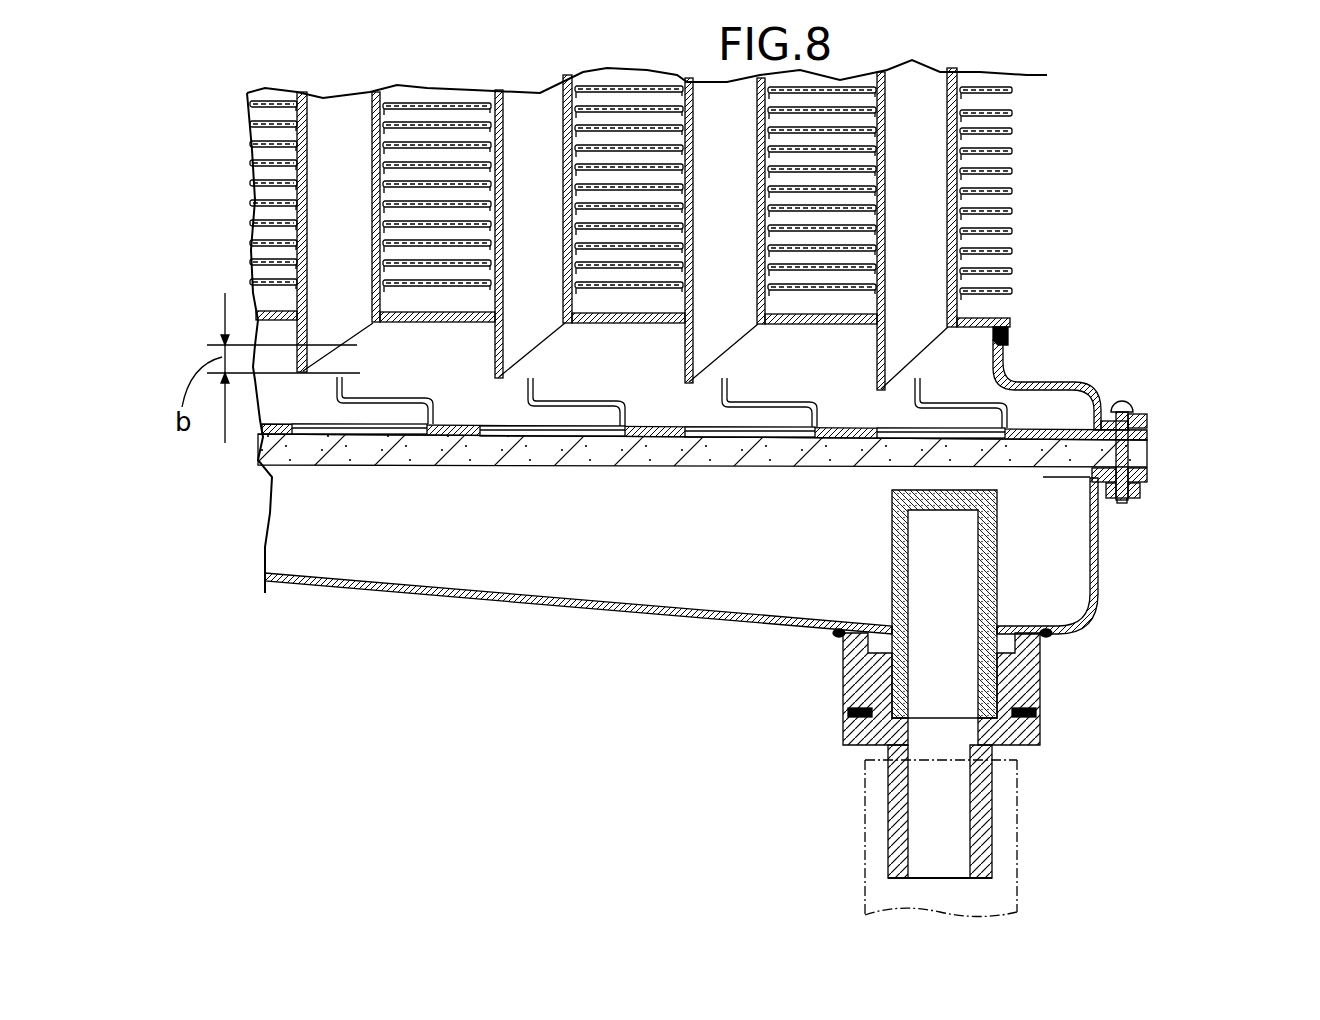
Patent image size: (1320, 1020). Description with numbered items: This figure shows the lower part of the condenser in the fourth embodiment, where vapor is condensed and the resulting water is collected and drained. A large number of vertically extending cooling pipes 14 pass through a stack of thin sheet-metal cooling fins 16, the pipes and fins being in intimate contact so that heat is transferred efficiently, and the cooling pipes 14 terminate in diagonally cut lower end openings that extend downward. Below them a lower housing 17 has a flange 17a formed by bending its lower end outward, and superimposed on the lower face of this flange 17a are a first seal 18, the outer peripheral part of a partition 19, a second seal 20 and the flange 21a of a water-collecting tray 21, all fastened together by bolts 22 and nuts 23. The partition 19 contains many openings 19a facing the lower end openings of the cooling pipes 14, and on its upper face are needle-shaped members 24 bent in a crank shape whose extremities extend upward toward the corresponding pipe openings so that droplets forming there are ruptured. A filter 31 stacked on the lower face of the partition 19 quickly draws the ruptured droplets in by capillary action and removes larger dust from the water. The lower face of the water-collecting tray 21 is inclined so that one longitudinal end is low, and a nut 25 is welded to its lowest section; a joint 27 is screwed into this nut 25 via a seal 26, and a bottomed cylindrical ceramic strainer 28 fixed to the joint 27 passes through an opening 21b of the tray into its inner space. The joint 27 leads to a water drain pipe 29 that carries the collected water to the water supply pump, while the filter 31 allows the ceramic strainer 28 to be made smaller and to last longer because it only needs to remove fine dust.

The cooling pipes 14 is at (303, 288).
The cooling fins 16 is at (1012, 290).
The lower housing 17 is at (1048, 374).
The flange 17a is at (1143, 417).
The first seal 18 is at (1150, 425).
The partition 19 is at (647, 440).
The openings 19a is at (382, 428).
The second seal 20 is at (1145, 473).
The water-collecting tray 21 is at (570, 617).
The flange 21a is at (1143, 490).
The opening 21b is at (903, 620).
The bolts 22 is at (1120, 398).
The nuts 23 is at (1120, 503).
The needle-shaped members 24 is at (380, 400).
The nut 25 is at (843, 660).
The seal 26 is at (848, 712).
The joint 27 is at (888, 780).
The ceramic strainer 28 is at (995, 542).
The water drain pipe 29 is at (865, 843).
The filter 31 is at (778, 452).